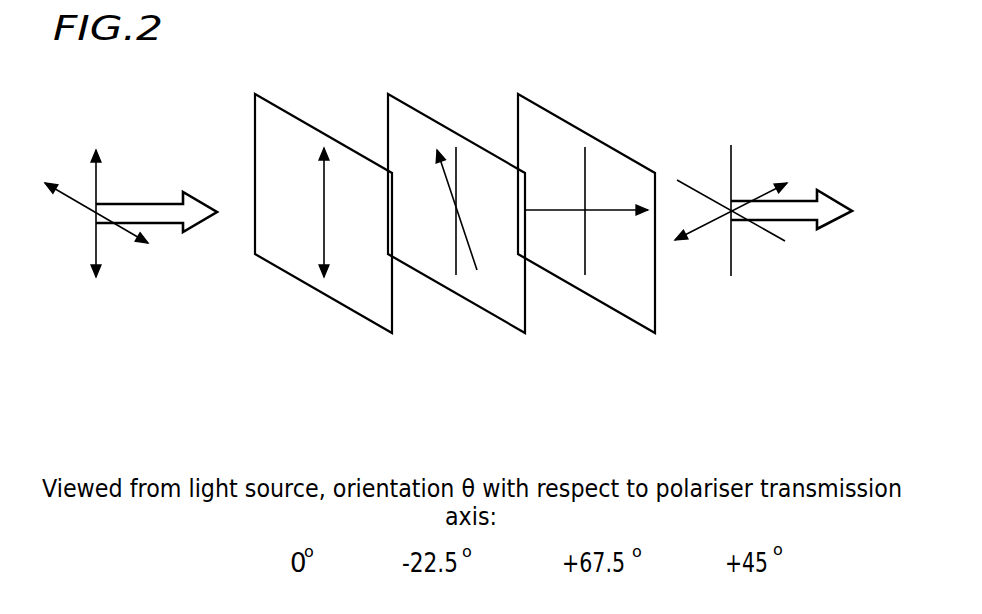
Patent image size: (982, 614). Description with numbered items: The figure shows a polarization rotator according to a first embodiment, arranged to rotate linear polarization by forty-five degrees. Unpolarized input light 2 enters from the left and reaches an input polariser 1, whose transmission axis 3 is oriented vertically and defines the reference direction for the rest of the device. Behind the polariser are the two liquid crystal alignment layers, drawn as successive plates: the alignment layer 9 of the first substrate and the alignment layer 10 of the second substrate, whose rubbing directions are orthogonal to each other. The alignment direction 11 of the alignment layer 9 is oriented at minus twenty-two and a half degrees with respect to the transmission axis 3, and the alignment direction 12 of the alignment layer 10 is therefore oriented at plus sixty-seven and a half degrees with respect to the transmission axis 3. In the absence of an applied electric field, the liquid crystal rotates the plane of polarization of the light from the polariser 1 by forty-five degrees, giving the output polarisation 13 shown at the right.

The input polariser 1 is at (325, 295).
The unpolarized input light 2 is at (147, 212).
The transmission axis 3 is at (323, 210).
The alignment layer 9 is at (463, 298).
The alignment layer 10 is at (580, 292).
The alignment direction of the alignment layer 9 11 is at (458, 225).
The alignment direction of the alignment layer 10 12 is at (607, 210).
The rotated plane of polarization 13 is at (762, 193).